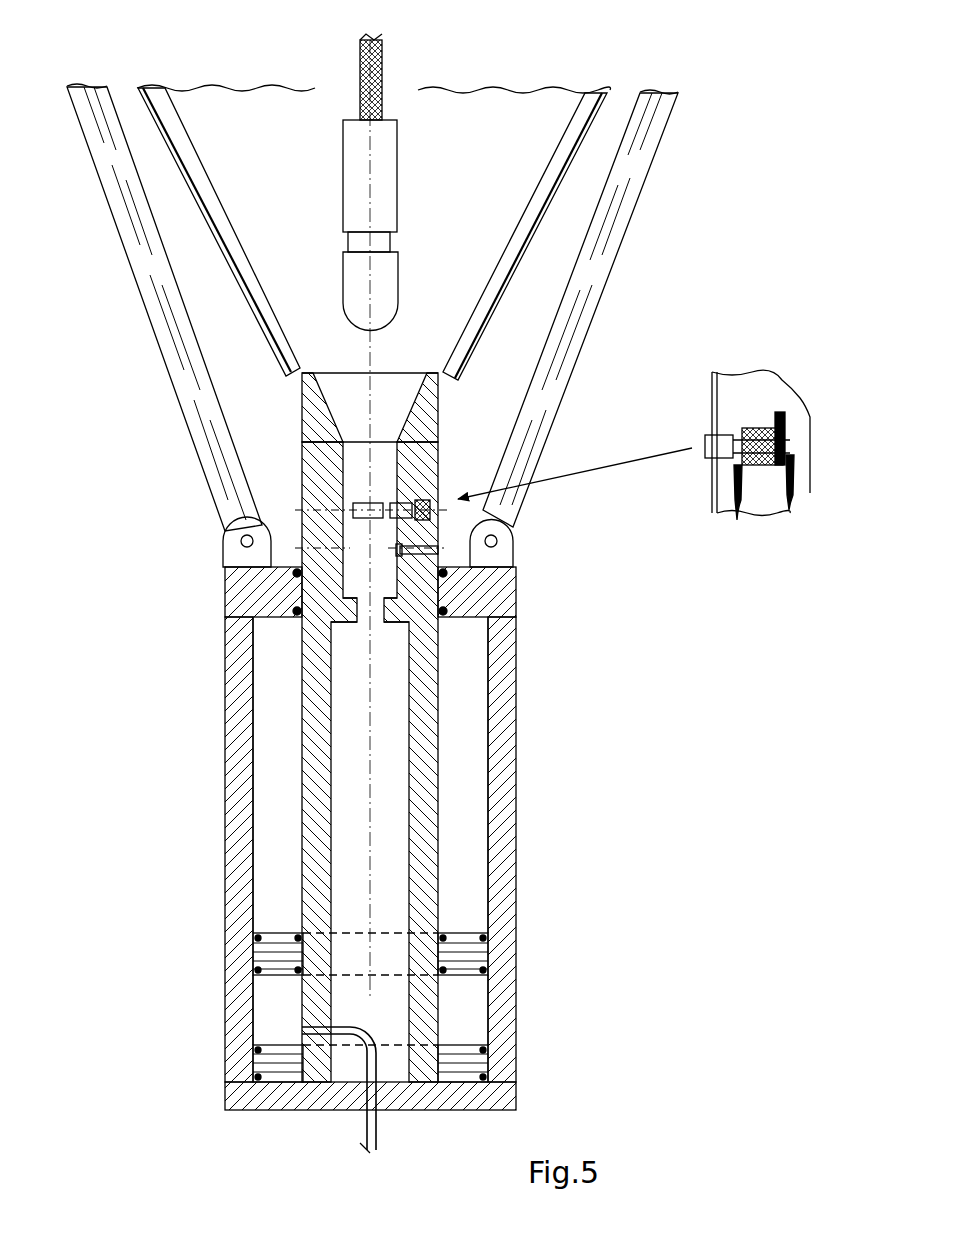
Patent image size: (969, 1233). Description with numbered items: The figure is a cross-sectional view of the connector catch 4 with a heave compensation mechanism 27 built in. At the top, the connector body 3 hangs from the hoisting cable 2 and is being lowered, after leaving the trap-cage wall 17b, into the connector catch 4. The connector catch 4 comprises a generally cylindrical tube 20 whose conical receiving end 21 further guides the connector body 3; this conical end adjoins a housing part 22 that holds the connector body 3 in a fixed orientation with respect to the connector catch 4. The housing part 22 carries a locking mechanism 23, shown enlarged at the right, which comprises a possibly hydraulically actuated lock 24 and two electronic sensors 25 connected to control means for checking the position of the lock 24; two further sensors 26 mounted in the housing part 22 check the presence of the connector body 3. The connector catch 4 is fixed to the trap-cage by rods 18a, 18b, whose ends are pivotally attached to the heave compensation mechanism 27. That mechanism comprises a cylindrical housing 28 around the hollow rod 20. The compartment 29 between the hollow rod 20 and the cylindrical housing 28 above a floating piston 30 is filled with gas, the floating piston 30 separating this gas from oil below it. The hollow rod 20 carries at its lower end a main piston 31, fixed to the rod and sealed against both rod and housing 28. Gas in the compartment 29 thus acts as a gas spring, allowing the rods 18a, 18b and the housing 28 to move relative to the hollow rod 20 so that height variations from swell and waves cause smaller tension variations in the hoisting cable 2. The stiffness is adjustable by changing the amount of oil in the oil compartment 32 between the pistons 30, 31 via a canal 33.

The hoisting cable 2 is at (369, 53).
The connector body 3 is at (388, 130).
The connector catch 4 is at (470, 412).
The trap-cage wall 17b is at (183, 171).
The rod 18a is at (138, 269).
The rod 18b is at (618, 226).
The cylindrical tube 20 is at (325, 425).
The conical receiving end 21 is at (337, 395).
The housing part 22 is at (360, 465).
The locking mechanism 23 is at (769, 421).
The lock 24 is at (758, 430).
The electronic sensors 25 is at (738, 483).
The sensors 26 is at (447, 548).
The heave compensation mechanism 27 is at (212, 630).
The cylindrical housing 28 is at (492, 1008).
The compartment 29 is at (272, 835).
The floating piston 30 is at (258, 950).
The main piston 31 is at (256, 1062).
The oil compartment 32 is at (268, 1005).
The canal 33 is at (378, 1136).